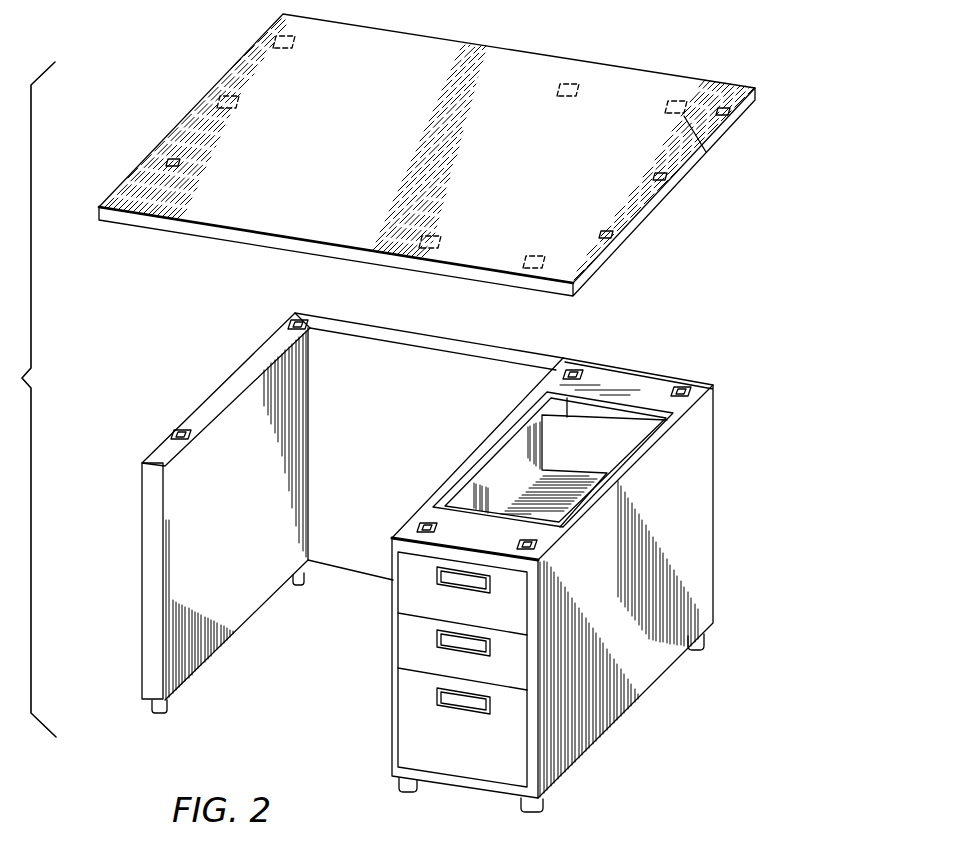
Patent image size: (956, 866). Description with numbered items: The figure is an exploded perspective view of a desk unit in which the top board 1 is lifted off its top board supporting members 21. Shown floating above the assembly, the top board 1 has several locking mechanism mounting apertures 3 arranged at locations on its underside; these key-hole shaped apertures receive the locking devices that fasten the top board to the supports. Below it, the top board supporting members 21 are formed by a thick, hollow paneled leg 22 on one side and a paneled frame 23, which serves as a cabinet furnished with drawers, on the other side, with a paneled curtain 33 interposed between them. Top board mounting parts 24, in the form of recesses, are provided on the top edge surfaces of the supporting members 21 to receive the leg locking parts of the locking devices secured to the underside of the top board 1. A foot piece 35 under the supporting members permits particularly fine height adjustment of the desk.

The top board 1 is at (506, 72).
The locking mechanism mounting apertures 3 is at (219, 98).
The top board supporting members 21 is at (239, 382).
The paneled leg 22 is at (147, 578).
The paneled frame 23 is at (612, 692).
The top board mounting parts 24 is at (176, 430).
The paneled curtain 33 is at (414, 461).
The foot piece 35 is at (154, 713).